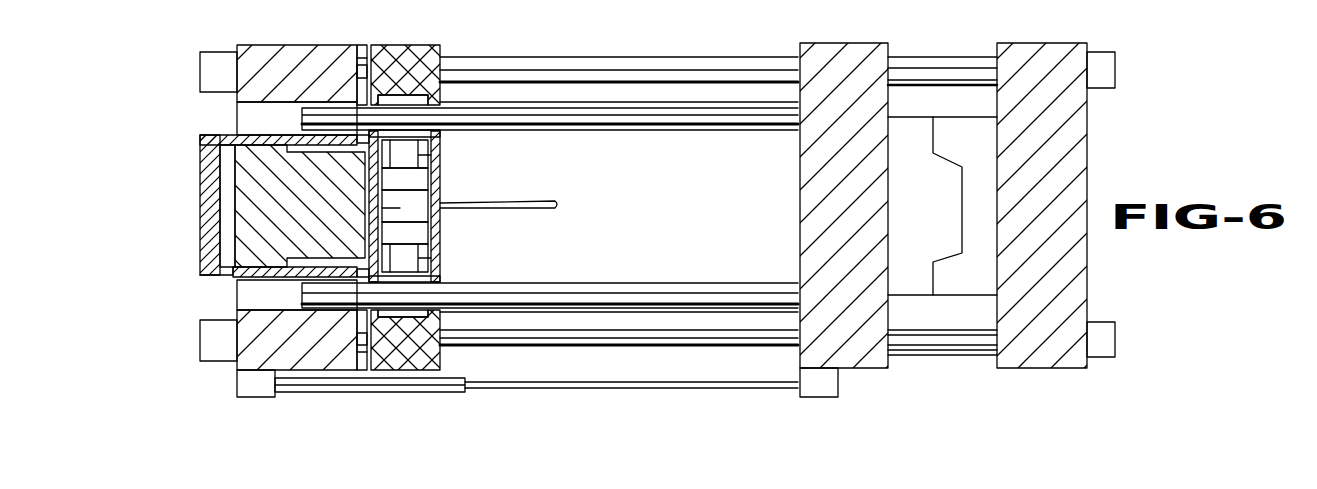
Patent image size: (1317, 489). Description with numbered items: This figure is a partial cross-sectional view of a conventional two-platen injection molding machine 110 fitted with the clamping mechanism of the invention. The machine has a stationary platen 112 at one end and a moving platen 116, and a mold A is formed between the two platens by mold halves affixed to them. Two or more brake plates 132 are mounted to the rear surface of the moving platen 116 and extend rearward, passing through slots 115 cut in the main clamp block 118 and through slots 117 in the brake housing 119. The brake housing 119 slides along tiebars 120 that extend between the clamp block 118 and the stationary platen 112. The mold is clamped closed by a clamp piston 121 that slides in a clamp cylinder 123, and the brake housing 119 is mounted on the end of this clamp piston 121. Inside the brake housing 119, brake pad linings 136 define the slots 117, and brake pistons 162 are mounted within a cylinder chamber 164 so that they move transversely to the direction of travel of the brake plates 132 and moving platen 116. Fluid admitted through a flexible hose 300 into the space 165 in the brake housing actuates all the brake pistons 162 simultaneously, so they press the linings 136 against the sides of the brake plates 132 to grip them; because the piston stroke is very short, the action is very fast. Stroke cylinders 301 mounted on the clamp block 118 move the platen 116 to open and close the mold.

The molding machine 110 is at (838, 392).
The stationary platen 112 is at (1072, 128).
The slots 115 is at (238, 117).
The moving platen 116 is at (870, 63).
The slots 117 is at (367, 72).
The main clamp block 118 is at (278, 62).
The brake housing 119 is at (413, 57).
The tiebars 120 is at (575, 70).
The clamp piston 121 is at (248, 203).
The clamp cylinder 123 is at (230, 158).
The brake plates 132 is at (762, 117).
The brake pad linings 136 is at (437, 90).
The brake pistons 162 is at (420, 182).
The cylinder chamber 164 is at (440, 157).
The space 165 is at (400, 208).
The flexible hose 300 is at (549, 208).
The stroke cylinders 301 is at (315, 388).
The mold A is at (942, 304).